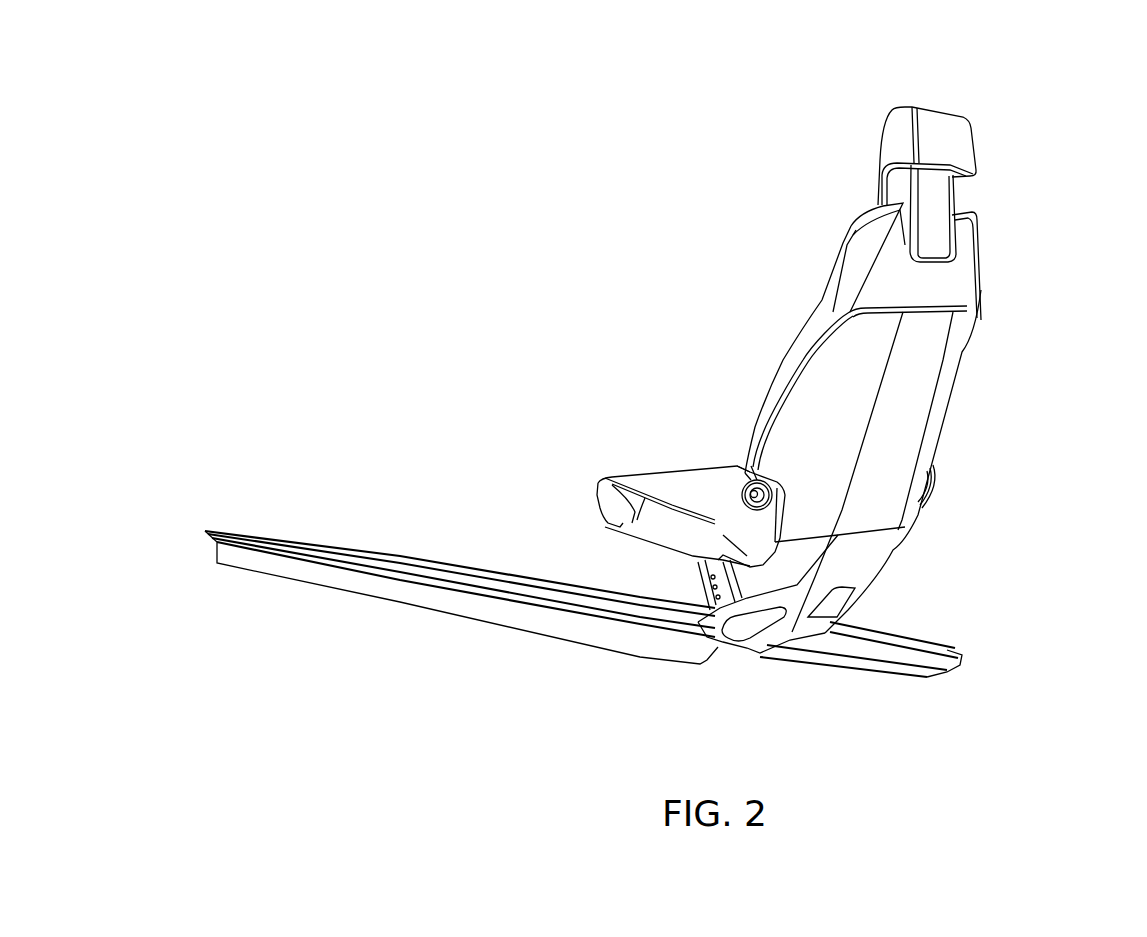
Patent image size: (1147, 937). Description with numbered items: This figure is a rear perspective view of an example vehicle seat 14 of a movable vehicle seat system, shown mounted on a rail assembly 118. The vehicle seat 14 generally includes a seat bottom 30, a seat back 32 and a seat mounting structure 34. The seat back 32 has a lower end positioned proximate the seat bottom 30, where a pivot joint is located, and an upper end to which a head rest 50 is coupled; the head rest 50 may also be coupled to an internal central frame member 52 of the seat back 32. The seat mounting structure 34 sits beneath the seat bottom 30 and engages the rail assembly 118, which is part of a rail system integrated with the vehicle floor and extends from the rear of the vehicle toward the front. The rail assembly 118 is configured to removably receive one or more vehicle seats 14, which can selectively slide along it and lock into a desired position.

The vehicle seat 14 is at (1058, 103).
The head rest 50 is at (958, 147).
The internal central frame member 52 is at (935, 248).
The seat back 32 is at (960, 402).
The seat bottom 30 is at (690, 466).
The seat mounting structure 34 is at (872, 602).
The rail assembly 118 is at (316, 537).